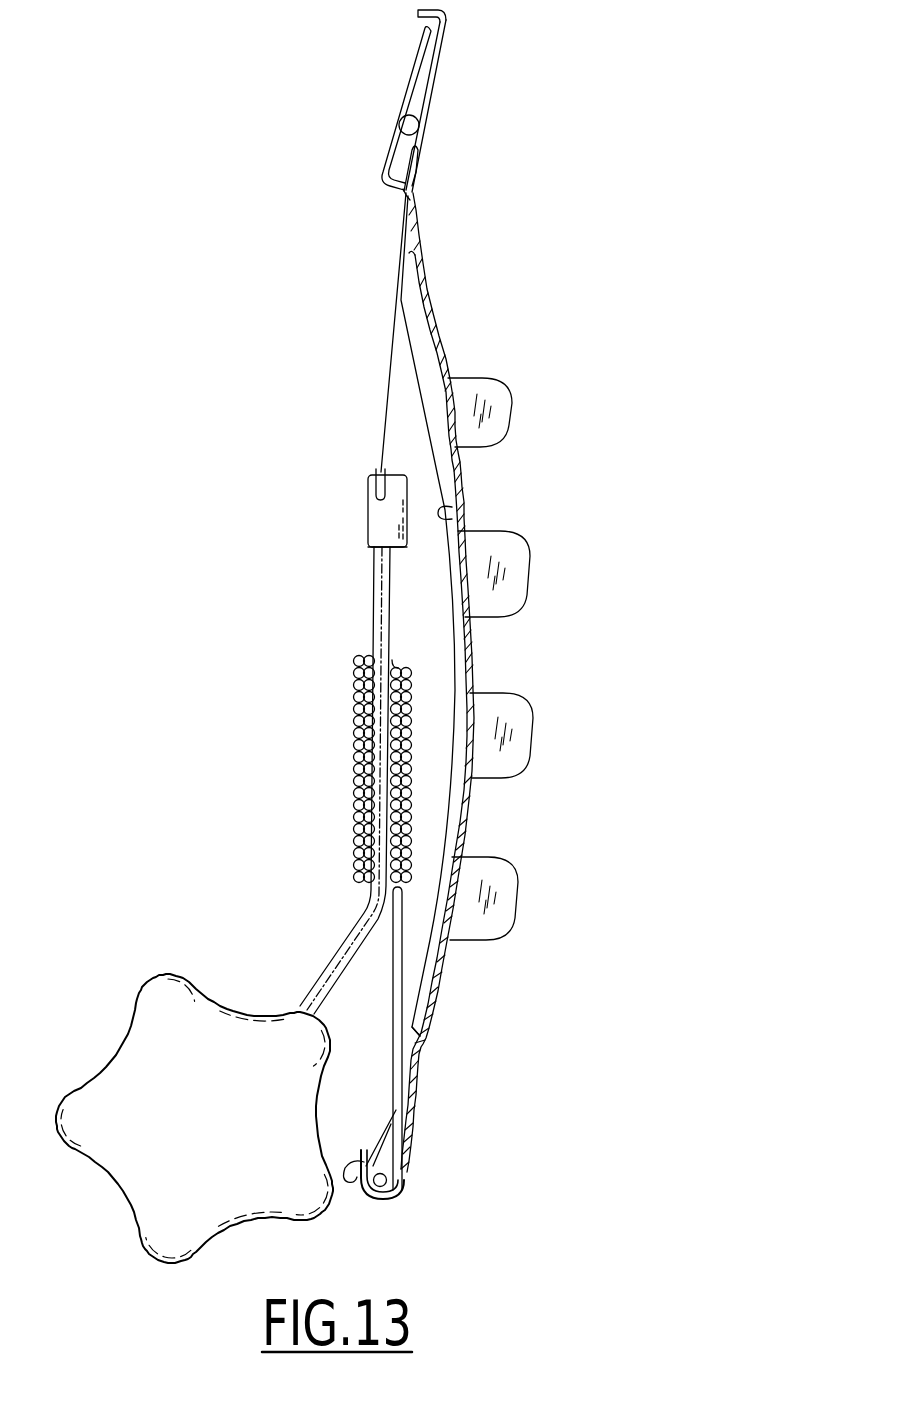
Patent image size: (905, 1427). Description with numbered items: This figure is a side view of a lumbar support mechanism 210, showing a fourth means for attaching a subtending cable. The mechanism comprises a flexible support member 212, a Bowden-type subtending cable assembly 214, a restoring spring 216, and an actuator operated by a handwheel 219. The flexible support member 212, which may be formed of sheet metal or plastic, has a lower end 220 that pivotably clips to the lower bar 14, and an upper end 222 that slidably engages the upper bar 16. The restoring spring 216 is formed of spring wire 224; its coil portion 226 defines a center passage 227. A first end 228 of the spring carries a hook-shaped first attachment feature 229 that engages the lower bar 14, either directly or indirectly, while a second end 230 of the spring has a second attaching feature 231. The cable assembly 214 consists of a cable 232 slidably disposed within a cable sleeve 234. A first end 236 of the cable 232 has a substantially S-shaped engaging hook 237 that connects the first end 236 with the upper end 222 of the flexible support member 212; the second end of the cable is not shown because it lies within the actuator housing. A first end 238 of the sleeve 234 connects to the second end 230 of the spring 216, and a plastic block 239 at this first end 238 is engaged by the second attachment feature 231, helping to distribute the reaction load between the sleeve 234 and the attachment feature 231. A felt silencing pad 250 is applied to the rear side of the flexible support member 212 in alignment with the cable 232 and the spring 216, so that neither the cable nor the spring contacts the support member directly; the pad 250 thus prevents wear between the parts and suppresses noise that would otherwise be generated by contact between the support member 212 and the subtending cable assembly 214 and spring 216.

The lumbar support mechanism 210 is at (220, 328).
The flexible support member 212 is at (460, 487).
The Bowden-type subtending cable assembly 214 is at (366, 599).
The restoring spring 216 is at (343, 694).
The handwheel 219 is at (147, 982).
The lower end 220 is at (410, 1113).
The upper end 222 is at (397, 128).
The spring wire 224 is at (400, 942).
The coil portion 226 is at (352, 828).
The center passage 227 is at (392, 660).
The first end 228 is at (403, 1153).
The first attachment feature 229 is at (383, 1199).
The second end 230 is at (376, 468).
The second attaching feature 231 is at (368, 480).
The cable 232 is at (389, 367).
The cable sleeve 234 is at (374, 630).
The first end 236 is at (398, 203).
The engaging hook 237 is at (418, 165).
The first end 238 is at (374, 560).
The plastic block 239 is at (368, 528).
The felt silencing pad 250 is at (440, 520).
The lower bar 14 is at (395, 1170).
The upper bar 16 is at (406, 114).